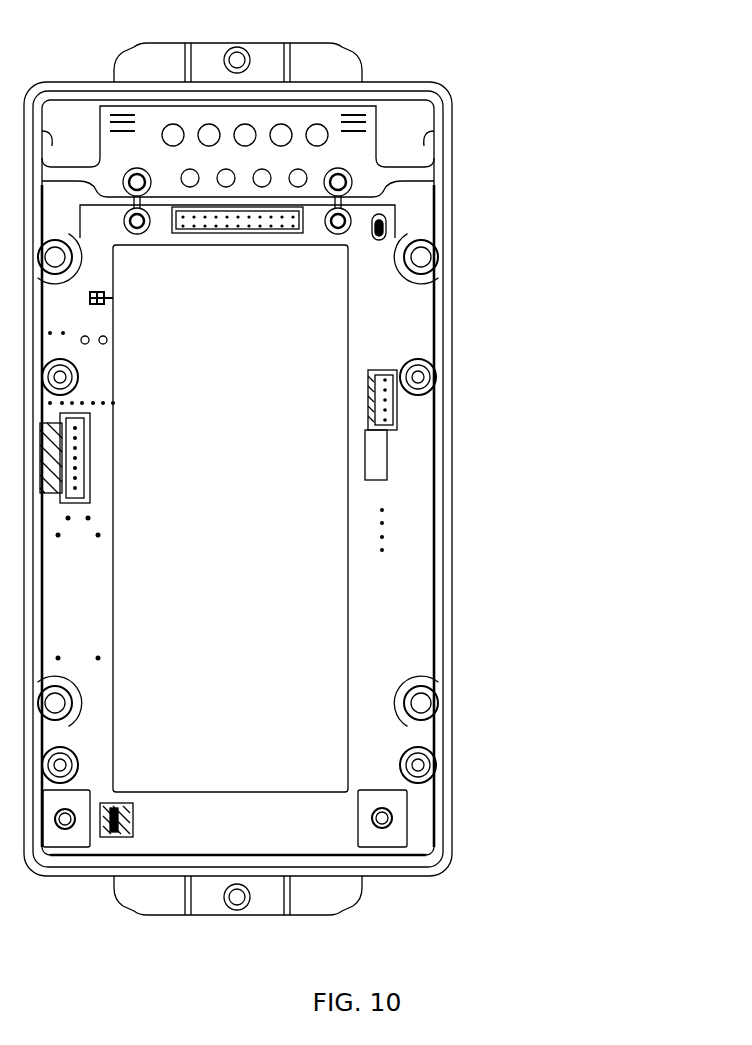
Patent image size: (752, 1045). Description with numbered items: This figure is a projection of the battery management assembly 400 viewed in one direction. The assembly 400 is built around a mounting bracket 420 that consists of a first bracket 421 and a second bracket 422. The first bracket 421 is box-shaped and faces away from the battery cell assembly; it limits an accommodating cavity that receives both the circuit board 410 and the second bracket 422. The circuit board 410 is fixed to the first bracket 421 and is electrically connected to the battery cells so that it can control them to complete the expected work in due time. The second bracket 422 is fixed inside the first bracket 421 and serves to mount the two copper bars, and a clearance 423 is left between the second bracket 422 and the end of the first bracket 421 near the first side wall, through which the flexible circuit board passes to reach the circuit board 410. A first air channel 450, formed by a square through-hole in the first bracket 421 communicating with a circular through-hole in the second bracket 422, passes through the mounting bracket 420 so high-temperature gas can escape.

The battery management assembly 400 is at (663, 398).
The circuit board 410 is at (393, 637).
The mounting bracket 420 is at (597, 339).
The first bracket 421 is at (447, 408).
The second bracket 422 is at (443, 175).
The clearance 423 is at (377, 100).
The first air channel 450 is at (173, 130).